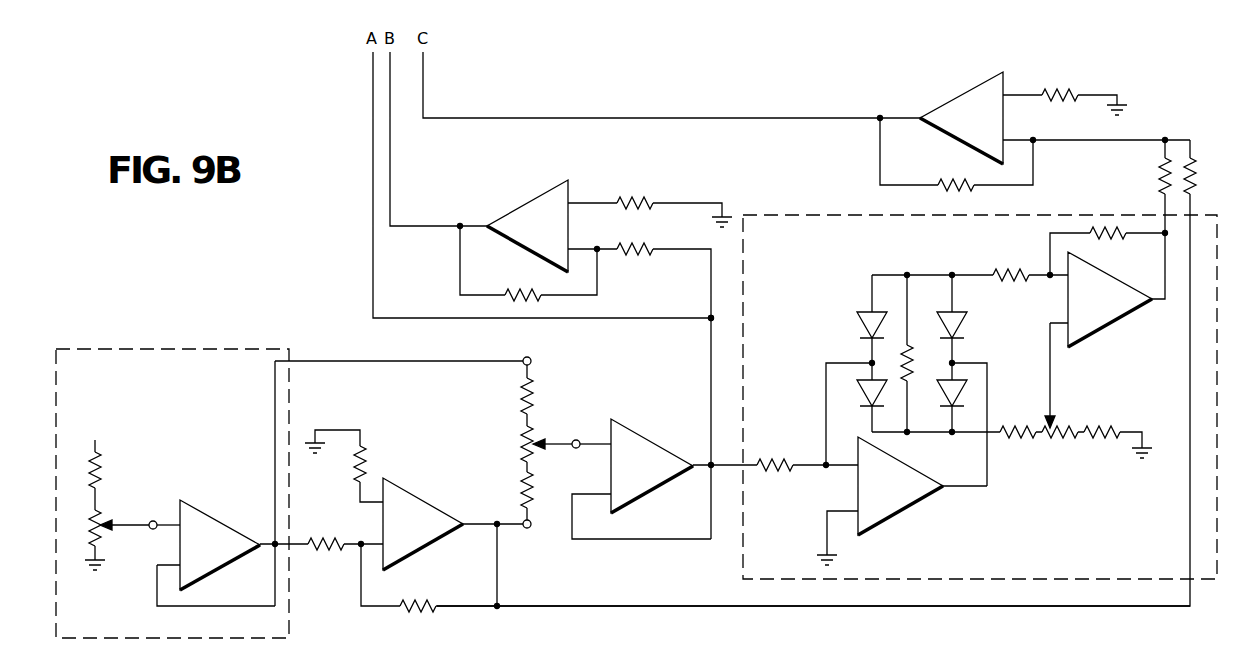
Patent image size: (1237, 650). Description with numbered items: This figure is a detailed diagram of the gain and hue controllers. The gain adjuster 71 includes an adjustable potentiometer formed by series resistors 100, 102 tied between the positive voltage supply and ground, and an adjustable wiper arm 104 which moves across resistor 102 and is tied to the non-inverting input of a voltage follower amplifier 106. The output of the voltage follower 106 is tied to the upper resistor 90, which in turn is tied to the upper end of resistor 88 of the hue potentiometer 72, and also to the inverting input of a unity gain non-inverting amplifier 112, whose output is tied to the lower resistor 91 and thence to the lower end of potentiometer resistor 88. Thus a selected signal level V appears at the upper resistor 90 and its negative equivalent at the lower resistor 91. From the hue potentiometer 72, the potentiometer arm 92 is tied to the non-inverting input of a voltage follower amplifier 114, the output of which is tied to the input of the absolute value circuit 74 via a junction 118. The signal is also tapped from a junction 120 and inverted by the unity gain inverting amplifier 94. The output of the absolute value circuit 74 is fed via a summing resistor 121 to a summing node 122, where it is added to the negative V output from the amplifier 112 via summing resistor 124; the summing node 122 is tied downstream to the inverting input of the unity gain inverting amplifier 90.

The gain adjuster 71 is at (215, 349).
The hue potentiometer 72 is at (558, 394).
The absolute value circuit 74 is at (814, 216).
The potentiometer resistor 88 is at (527, 432).
The upper resistor / unity gain inverting amplifier 90 is at (973, 102).
The lower resistor 91 is at (527, 494).
The potentiometer arm 92 is at (566, 442).
The unity gain inverting amplifier 94 is at (528, 215).
The series resistor 100 is at (102, 465).
The series resistor 102 is at (96, 518).
The adjustable wiper arm 104 is at (126, 524).
The voltage follower amplifier 106 is at (200, 514).
The unity gain non-inverting amplifier 112 is at (410, 504).
The voltage follower amplifier 114 is at (630, 446).
The junction 118 is at (711, 465).
The junction 120 is at (711, 318).
The summing resistor 121 is at (1160, 180).
The summing node 122 is at (1165, 158).
The summing resistor 124 is at (1190, 168).